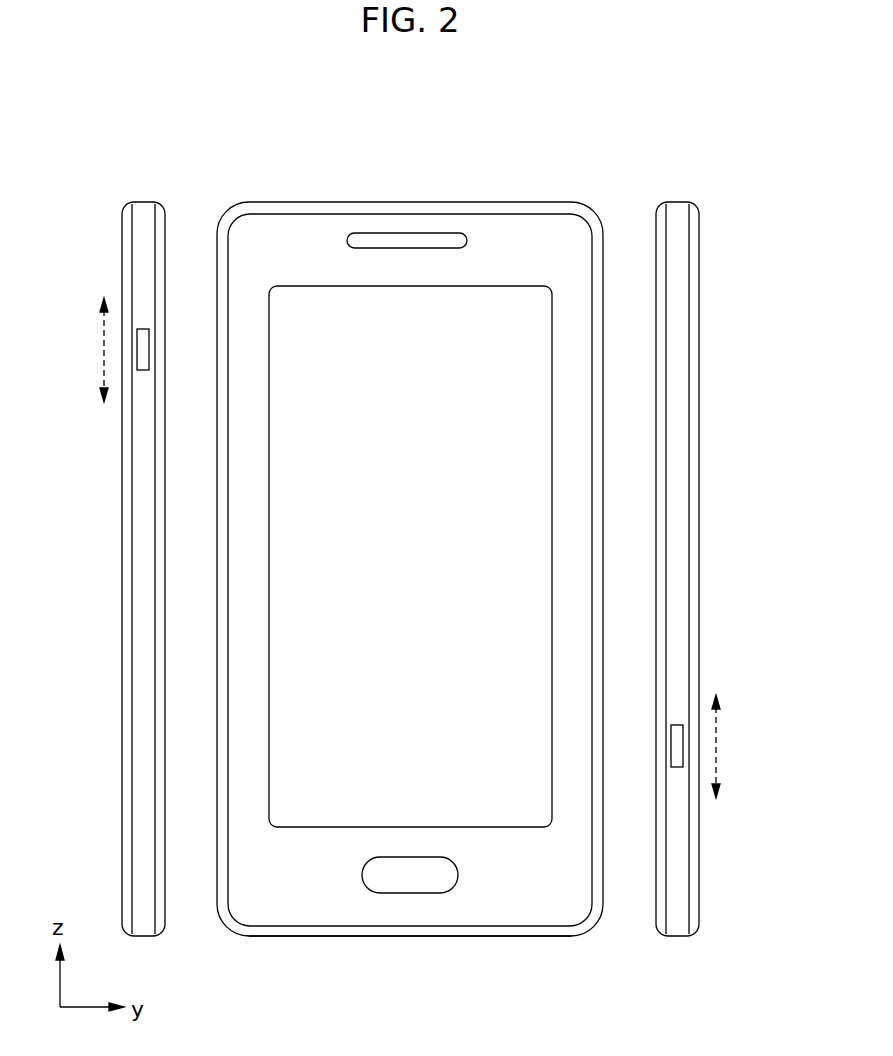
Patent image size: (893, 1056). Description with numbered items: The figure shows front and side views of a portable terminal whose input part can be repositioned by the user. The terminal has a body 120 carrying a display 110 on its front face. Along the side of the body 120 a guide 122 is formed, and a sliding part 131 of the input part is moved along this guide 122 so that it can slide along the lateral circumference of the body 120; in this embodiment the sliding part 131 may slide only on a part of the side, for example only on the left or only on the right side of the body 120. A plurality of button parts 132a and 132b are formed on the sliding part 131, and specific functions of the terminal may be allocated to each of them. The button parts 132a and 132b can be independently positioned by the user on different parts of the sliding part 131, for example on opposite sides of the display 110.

The display 110 is at (338, 316).
The body 120 is at (510, 240).
The guide 122 is at (555, 933).
The sliding part 131 is at (143, 534).
The button part 132a is at (142, 343).
The button part 132b is at (678, 745).